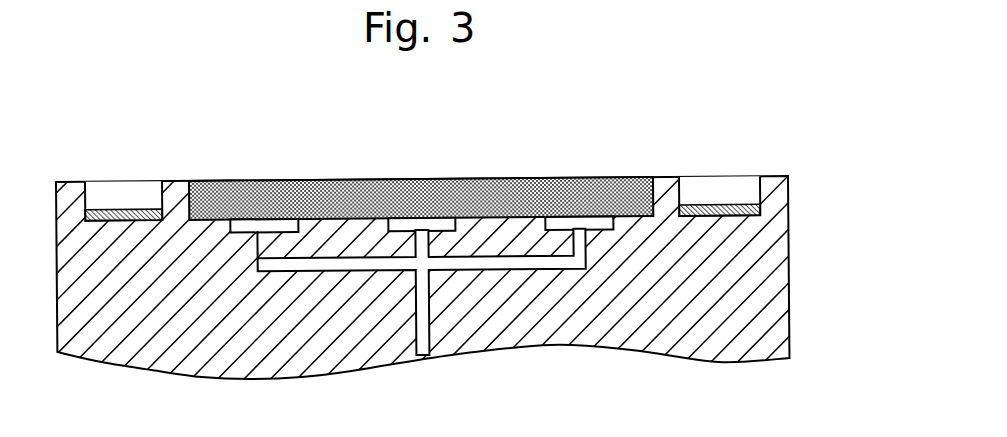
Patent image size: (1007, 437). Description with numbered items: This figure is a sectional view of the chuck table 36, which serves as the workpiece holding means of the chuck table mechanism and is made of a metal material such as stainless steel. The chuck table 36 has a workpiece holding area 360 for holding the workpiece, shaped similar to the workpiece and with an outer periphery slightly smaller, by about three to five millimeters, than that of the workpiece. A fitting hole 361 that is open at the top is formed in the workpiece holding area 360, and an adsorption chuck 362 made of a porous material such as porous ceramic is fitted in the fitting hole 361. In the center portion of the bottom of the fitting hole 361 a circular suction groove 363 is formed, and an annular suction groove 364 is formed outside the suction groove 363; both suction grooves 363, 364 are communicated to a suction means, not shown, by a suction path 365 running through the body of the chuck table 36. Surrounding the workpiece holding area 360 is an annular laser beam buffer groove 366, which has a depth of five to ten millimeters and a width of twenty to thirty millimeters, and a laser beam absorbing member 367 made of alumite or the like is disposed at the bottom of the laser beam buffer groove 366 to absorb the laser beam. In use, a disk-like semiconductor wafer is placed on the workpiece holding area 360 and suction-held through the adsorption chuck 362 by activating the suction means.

The chuck table 36 is at (790, 240).
The workpiece holding area 360 is at (569, 177).
The fitting hole 361 is at (627, 228).
The adsorption chuck 362 is at (333, 190).
The circular suction groove 363 is at (402, 228).
The annular suction groove 364 is at (243, 228).
The suction path 365 is at (426, 327).
The annular laser beam buffer groove 366 is at (717, 190).
The laser beam absorbing member 367 is at (117, 210).